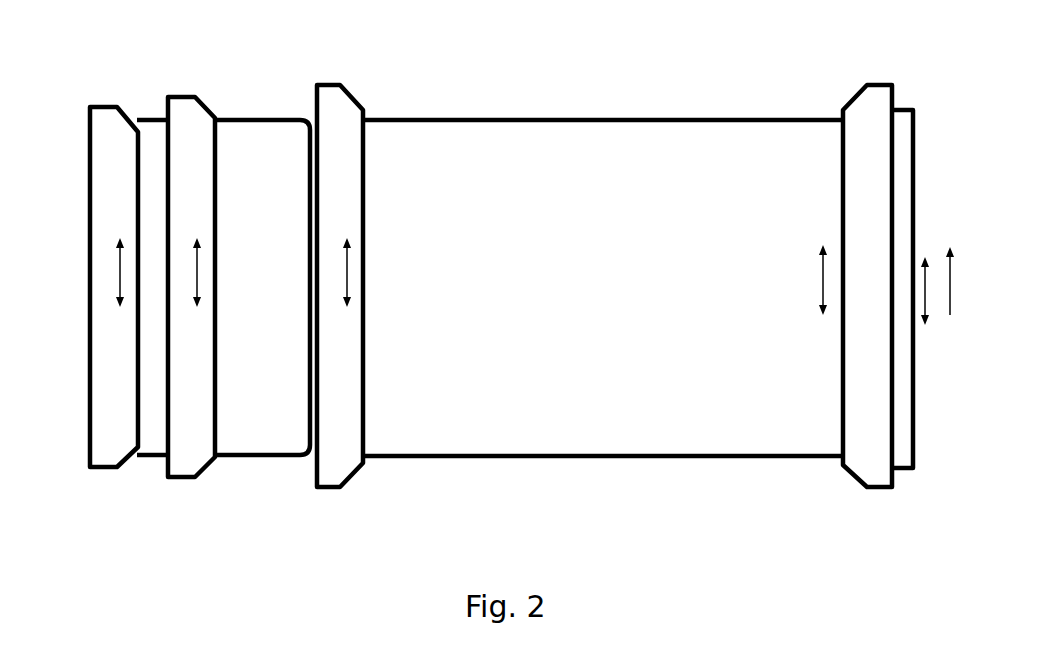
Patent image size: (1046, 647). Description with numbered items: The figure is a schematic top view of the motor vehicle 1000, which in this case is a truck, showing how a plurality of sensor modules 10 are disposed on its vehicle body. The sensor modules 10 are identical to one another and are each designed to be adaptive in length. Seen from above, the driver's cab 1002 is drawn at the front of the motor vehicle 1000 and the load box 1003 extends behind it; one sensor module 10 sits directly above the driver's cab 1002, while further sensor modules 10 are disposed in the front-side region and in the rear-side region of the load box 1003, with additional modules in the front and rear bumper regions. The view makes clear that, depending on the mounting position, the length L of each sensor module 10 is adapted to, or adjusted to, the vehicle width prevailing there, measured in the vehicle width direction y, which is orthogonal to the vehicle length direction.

The motor vehicle 1000 is at (244, 51).
The sensor module 10 is at (120, 142).
The driver's cab 1002 is at (275, 155).
The load box 1003 is at (557, 155).